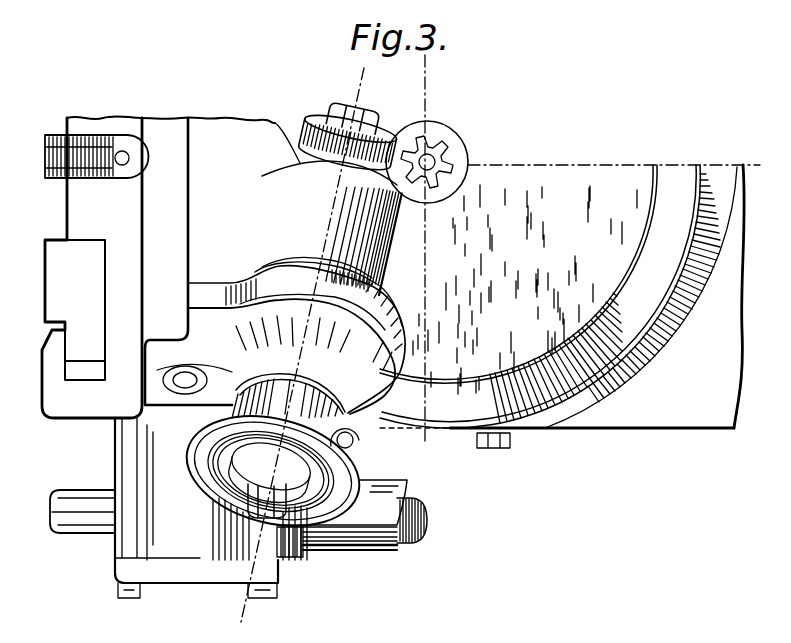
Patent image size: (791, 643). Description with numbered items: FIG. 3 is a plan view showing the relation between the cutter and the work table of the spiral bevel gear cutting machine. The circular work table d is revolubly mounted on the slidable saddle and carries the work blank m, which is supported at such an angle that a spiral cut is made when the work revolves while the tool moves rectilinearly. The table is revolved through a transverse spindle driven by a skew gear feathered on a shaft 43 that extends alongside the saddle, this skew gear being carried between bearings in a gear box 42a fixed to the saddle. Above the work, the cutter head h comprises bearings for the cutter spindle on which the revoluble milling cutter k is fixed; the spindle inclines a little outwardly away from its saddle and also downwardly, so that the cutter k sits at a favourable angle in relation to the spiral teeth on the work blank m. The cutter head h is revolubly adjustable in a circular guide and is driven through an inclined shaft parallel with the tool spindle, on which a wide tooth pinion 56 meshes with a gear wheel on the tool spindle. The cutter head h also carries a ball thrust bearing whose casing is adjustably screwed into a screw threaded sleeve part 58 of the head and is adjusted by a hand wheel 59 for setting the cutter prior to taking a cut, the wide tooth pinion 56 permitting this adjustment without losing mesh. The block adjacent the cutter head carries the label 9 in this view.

The clamp jaw block 9 is at (95, 268).
The milling cutter k is at (373, 118).
The work blank m is at (451, 155).
The work table d is at (562, 306).
The cutter head h is at (405, 352).
The screw threaded sleeve part 58 is at (258, 395).
The wide tooth pinion 56 is at (182, 388).
The hand wheel 59 is at (350, 467).
The shaft 43 is at (72, 490).
The gear box 42a is at (143, 550).